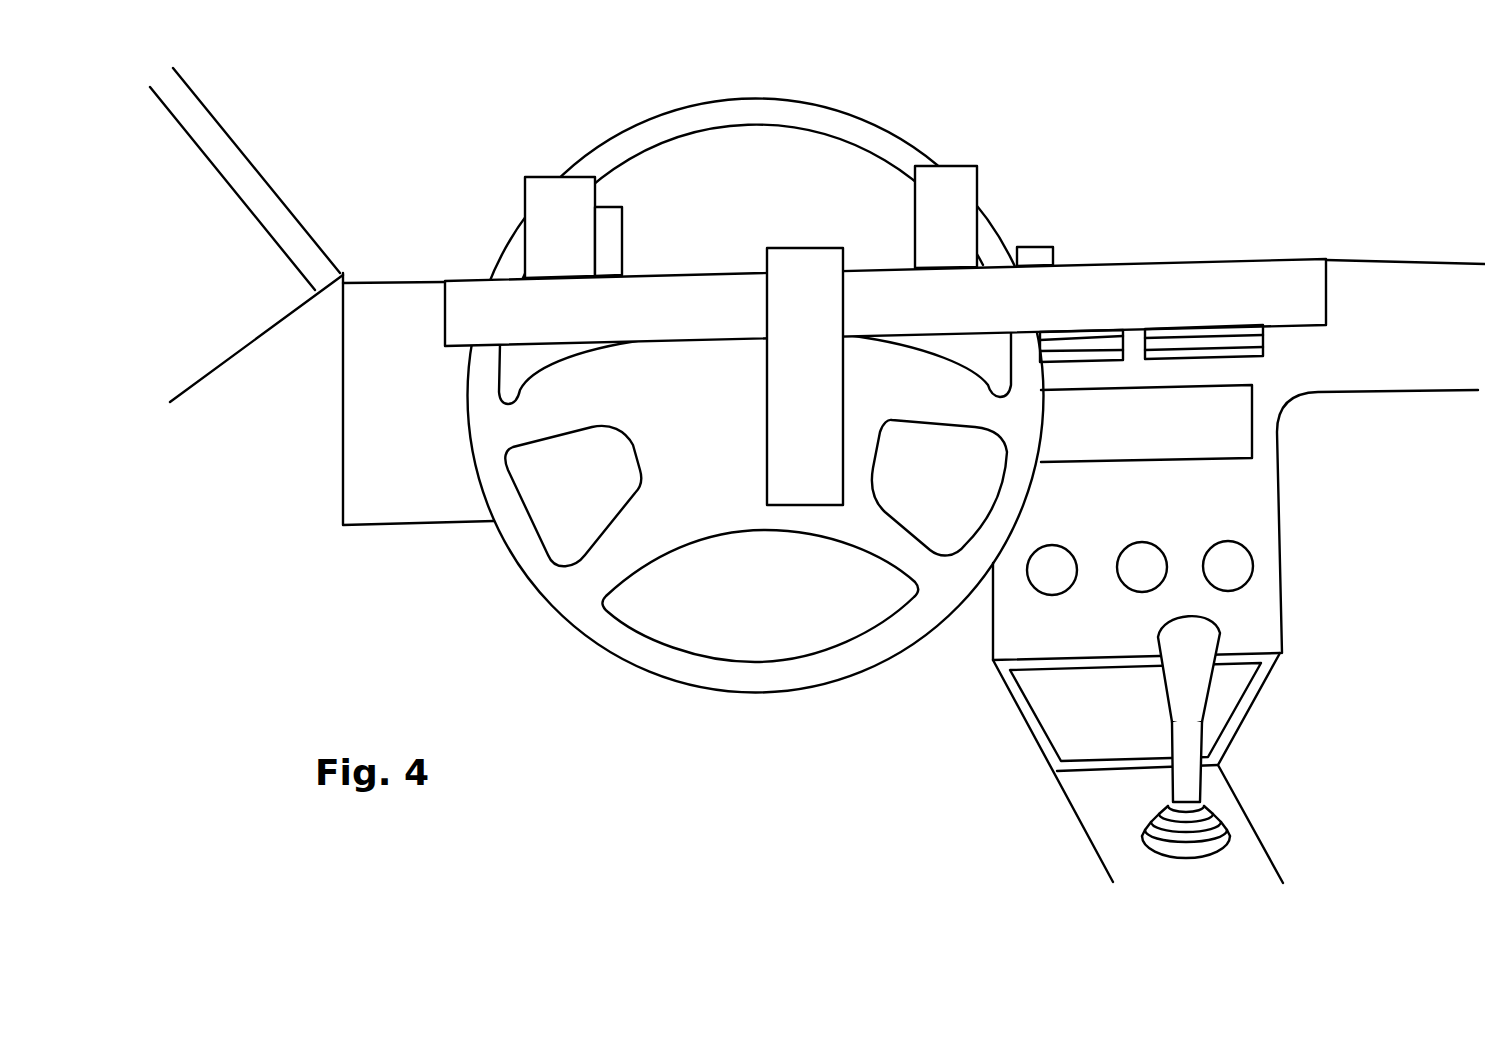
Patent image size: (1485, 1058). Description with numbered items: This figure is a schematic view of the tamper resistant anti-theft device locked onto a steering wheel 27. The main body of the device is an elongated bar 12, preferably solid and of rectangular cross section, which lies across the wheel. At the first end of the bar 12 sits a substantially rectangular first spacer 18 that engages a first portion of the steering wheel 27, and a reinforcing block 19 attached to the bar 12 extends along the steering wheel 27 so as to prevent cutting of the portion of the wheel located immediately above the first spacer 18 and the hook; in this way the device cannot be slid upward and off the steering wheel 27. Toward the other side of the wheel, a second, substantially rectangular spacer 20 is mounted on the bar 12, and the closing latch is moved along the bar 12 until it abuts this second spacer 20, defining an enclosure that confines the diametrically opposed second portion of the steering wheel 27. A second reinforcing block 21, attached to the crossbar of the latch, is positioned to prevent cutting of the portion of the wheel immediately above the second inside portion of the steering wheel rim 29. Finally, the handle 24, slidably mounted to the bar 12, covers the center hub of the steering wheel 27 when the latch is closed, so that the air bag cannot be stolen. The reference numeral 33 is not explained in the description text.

The elongated bar 12 is at (1330, 303).
The first spacer 18 is at (623, 231).
The reinforcing block 19 is at (562, 176).
The second spacer 20 is at (1057, 249).
The second reinforcing block 21 is at (960, 165).
The handle 24 is at (767, 403).
The steering wheel 27 is at (699, 696).
The steering wheel rim 29 is at (890, 655).
The steering wheel hub opening 33 is at (718, 508).